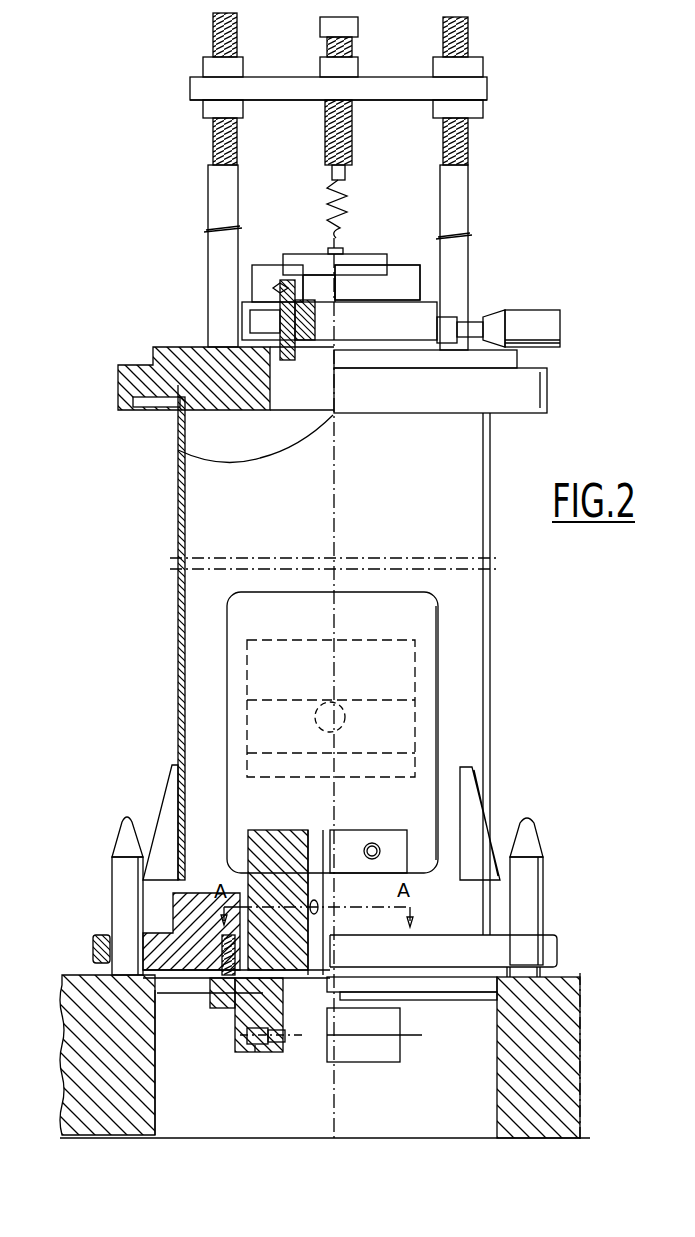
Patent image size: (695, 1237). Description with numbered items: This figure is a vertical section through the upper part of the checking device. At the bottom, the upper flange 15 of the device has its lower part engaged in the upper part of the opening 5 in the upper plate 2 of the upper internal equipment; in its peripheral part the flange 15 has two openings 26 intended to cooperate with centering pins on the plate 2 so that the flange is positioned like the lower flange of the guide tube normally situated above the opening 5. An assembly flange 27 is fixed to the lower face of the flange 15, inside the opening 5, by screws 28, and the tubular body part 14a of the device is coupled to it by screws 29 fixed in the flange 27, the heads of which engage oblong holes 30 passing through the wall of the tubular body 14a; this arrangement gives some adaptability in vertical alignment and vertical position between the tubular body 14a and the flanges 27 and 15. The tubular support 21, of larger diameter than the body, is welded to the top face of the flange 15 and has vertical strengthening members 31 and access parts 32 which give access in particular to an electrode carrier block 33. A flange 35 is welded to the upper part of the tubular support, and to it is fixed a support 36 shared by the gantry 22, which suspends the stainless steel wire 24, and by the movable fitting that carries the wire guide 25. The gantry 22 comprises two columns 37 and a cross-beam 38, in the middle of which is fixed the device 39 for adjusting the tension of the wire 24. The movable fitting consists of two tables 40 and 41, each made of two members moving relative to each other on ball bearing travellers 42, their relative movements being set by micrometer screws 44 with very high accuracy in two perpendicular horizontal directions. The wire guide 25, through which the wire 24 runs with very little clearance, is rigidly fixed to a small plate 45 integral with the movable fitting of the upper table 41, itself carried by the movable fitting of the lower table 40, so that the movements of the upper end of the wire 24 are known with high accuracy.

The gantry 22 is at (424, 90).
The cross-beam 38 is at (378, 98).
The device for adjusting the tension of the wire 39 is at (352, 146).
The columns 37 is at (468, 190).
The ball bearing travellers 42 is at (280, 283).
The small plate 45 is at (312, 258).
The wire guide 25 is at (345, 250).
The lower table 40 is at (340, 293).
The upper table 41 is at (377, 282).
The micrometer screws 44 is at (560, 326).
The support 36 is at (160, 347).
The flange 35 is at (178, 385).
The tubular support 21 is at (178, 448).
The stainless steel wire 24 is at (338, 447).
The access parts 32 is at (440, 640).
The electrode carrier block 33 is at (283, 840).
The vertical strengthening members 31 is at (163, 817).
The openings 26 is at (100, 935).
The upper flange 15 is at (157, 990).
The screws 28 is at (235, 1000).
The oblong holes 30 is at (250, 1030).
The assembly flange 27 is at (265, 995).
The screws 29 is at (250, 1040).
The tubular body part 14a is at (255, 1050).
The upper plate 2 is at (114, 1076).
The opening 5 is at (157, 1078).